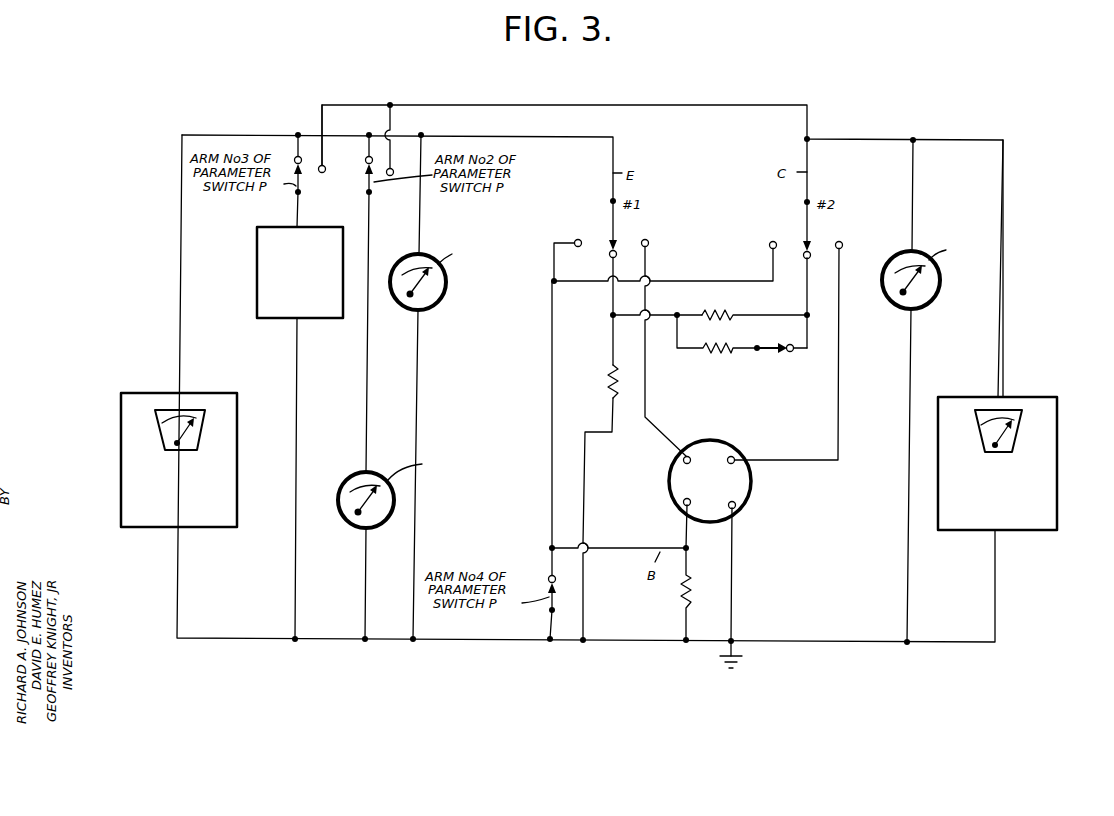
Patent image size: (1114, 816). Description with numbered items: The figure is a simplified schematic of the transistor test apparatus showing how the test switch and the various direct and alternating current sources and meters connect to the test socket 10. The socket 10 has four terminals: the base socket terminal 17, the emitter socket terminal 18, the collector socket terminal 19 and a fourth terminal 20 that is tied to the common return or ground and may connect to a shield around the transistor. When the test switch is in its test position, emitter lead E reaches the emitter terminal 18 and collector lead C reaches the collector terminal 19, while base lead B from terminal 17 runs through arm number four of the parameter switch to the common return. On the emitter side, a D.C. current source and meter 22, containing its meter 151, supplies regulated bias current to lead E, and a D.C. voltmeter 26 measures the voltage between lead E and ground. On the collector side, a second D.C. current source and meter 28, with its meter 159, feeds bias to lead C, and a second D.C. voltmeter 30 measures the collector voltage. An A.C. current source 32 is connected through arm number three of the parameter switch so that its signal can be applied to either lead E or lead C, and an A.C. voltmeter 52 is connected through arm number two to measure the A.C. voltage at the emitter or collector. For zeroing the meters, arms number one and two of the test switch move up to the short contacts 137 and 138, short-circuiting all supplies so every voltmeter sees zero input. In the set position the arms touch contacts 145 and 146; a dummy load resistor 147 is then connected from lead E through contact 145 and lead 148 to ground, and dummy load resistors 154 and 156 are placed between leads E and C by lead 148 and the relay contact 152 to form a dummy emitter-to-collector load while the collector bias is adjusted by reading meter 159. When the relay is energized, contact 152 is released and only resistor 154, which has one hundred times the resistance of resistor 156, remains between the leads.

The test socket 10 is at (752, 493).
The base socket terminal 17 is at (683, 507).
The emitter socket terminal 18 is at (684, 464).
The collector socket terminal 19 is at (736, 462).
The ground socket terminal 20 is at (737, 511).
The D.C. current source and meter 22 is at (147, 460).
The D.C. voltmeter 26 is at (447, 283).
The second D.C. current source and meter 28 is at (1017, 463).
The second D.C. voltmeter circuit 30 is at (940, 296).
The A.C. current source 32 is at (257, 240).
The A.C. voltmeter 52 is at (349, 527).
The short contact 137 is at (583, 239).
The short contact 138 is at (769, 248).
The set contact 145 is at (617, 257).
The set contact 146 is at (811, 258).
The dummy load resistor 147 is at (606, 381).
The lead 148 is at (612, 348).
The meter 151 is at (194, 440).
The relay contact 152 is at (786, 355).
The dummy load resistor 154 is at (712, 313).
The dummy load resistor 156 is at (711, 341).
The meter 159 is at (1018, 430).